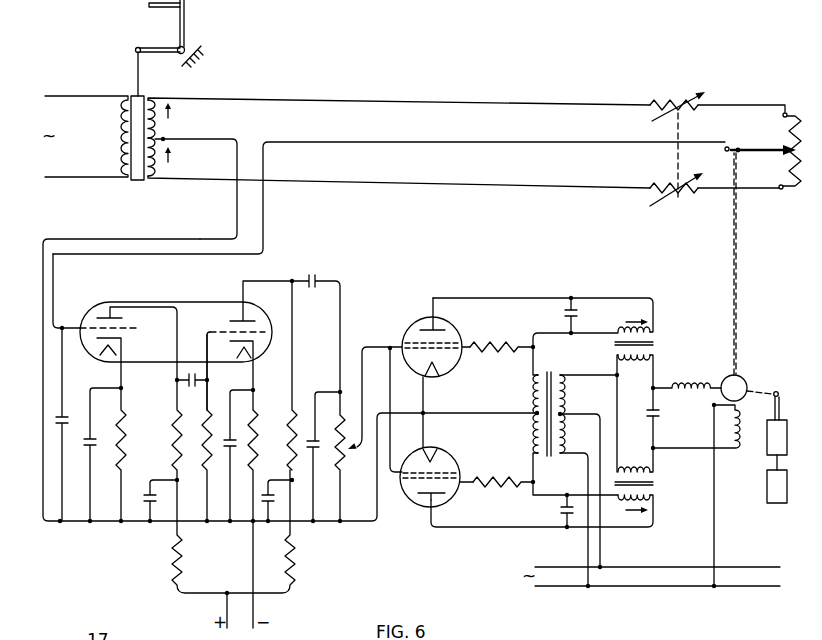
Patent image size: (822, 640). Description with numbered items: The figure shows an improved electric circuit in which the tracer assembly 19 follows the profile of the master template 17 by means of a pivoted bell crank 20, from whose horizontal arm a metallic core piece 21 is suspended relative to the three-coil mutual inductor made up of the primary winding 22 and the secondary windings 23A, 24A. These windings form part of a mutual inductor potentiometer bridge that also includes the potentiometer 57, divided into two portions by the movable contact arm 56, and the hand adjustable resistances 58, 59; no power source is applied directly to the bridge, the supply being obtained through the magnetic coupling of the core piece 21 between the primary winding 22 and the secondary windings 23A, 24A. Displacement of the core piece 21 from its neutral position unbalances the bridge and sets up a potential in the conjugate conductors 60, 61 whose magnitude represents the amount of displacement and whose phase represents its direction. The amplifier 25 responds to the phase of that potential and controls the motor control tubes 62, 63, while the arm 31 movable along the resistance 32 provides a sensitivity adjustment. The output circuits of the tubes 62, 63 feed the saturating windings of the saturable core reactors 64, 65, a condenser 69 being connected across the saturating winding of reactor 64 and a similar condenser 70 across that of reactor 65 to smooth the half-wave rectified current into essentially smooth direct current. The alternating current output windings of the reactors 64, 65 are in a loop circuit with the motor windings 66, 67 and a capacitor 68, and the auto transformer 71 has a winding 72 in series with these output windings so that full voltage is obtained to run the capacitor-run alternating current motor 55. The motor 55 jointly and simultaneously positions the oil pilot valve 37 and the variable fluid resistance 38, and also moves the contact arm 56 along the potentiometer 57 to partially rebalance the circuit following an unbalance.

The master template 17 is at (153, 11).
The tracer assembly 19 is at (138, 133).
The pivoted bell crank 20 is at (187, 21).
The metallic core piece 21 is at (137, 182).
The primary winding 22 is at (110, 139).
The secondary winding 23A is at (174, 106).
The secondary winding 24A is at (172, 150).
The amplifier 25 is at (209, 293).
The arm 31 is at (367, 453).
The resistance 32 is at (334, 425).
The oil pilot valve 37 is at (786, 437).
The variable fluid resistance 38 is at (777, 503).
The alternating current motor 55 is at (780, 382).
The contact arm 56 is at (760, 148).
The potentiometer 57 is at (798, 183).
The hand adjustable resistance 58 is at (672, 100).
The hand adjustable resistance 59 is at (680, 194).
The conjugate conductor 60 is at (265, 202).
The conjugate conductor 61 is at (236, 202).
The motor control tube 62 is at (421, 504).
The motor control tube 63 is at (416, 322).
The saturable core reactor 64 is at (647, 339).
The saturable core reactor 65 is at (646, 490).
The motor winding 66 is at (705, 393).
The motor winding 67 is at (740, 434).
The capacitor 68 is at (668, 420).
The condenser 69 is at (563, 315).
The condenser 70 is at (558, 511).
The auto transformer 71 is at (528, 414).
The transformer winding 72 is at (583, 414).